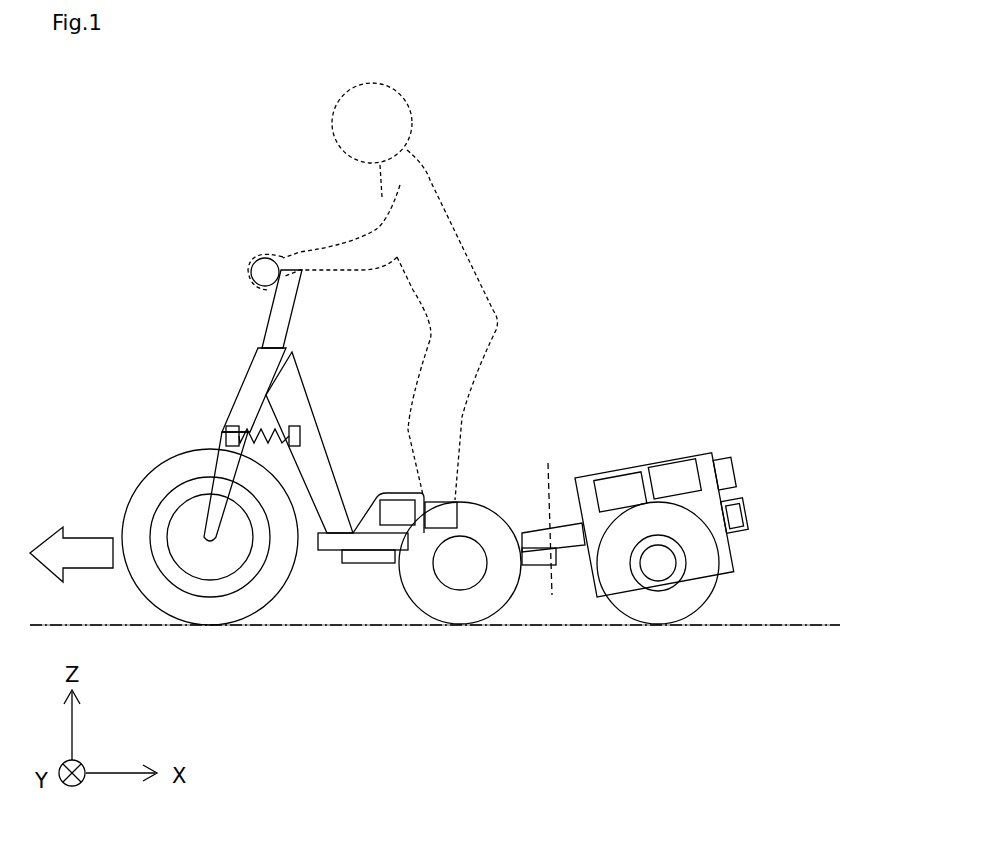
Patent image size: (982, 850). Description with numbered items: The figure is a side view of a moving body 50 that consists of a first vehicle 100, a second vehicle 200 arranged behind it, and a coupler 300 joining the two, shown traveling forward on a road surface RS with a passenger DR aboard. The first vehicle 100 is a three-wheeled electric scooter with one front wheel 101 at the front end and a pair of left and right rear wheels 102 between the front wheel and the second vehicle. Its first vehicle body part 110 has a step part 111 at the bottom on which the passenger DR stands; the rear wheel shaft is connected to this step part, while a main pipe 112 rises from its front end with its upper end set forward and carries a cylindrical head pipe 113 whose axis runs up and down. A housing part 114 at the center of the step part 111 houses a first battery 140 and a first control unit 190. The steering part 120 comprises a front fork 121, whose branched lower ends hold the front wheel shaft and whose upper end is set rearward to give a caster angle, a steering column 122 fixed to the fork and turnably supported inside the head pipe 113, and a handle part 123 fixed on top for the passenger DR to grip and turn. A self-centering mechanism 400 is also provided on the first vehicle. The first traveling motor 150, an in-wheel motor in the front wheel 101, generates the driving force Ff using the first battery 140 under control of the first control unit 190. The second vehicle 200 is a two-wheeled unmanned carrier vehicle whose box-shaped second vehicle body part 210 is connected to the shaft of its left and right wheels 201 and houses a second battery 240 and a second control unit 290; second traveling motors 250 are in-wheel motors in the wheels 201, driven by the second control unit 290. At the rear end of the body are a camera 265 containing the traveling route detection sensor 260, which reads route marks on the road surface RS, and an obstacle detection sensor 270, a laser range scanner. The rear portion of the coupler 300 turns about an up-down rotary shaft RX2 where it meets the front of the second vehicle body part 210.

The moving body 50 is at (700, 104).
The first vehicle 100 is at (227, 184).
The front wheel 101 is at (280, 593).
The rear wheels 102 is at (503, 607).
The first vehicle body part 110 is at (380, 393).
The step part 111 is at (370, 530).
The main pipe 112 is at (290, 410).
The head pipe 113 is at (245, 378).
The housing part 114 is at (400, 492).
The steering part 120 is at (173, 320).
The front fork 121 is at (217, 465).
The steering column 122 is at (265, 322).
The handle part 123 is at (245, 262).
The first battery 140 is at (393, 535).
The first traveling motor 150 is at (183, 500).
The first control unit 190 is at (447, 573).
The second vehicle 200 is at (736, 408).
The wheels 201 is at (710, 597).
The second vehicle body part 210 is at (645, 463).
The second battery 240 is at (612, 472).
The second traveling motors 250 is at (647, 573).
The traveling route detection sensor 260 is at (750, 507).
The camera 265 is at (750, 523).
The obstacle detection sensor 270 is at (740, 473).
The second control unit 290 is at (678, 447).
The coupler 300 is at (521, 488).
The self-centering mechanism 400 is at (218, 414).
The passenger DR is at (455, 225).
The road surface RS is at (797, 623).
The rotary shaft RX2 is at (563, 517).
The driving force Ff is at (80, 538).